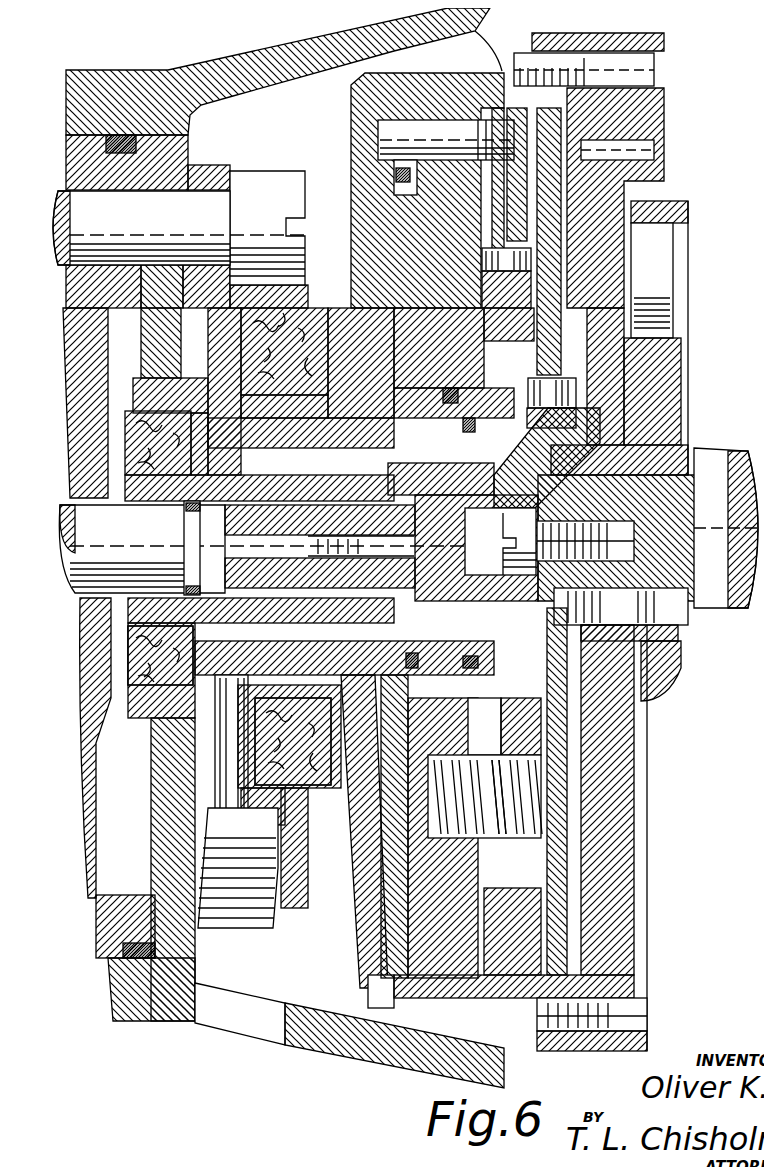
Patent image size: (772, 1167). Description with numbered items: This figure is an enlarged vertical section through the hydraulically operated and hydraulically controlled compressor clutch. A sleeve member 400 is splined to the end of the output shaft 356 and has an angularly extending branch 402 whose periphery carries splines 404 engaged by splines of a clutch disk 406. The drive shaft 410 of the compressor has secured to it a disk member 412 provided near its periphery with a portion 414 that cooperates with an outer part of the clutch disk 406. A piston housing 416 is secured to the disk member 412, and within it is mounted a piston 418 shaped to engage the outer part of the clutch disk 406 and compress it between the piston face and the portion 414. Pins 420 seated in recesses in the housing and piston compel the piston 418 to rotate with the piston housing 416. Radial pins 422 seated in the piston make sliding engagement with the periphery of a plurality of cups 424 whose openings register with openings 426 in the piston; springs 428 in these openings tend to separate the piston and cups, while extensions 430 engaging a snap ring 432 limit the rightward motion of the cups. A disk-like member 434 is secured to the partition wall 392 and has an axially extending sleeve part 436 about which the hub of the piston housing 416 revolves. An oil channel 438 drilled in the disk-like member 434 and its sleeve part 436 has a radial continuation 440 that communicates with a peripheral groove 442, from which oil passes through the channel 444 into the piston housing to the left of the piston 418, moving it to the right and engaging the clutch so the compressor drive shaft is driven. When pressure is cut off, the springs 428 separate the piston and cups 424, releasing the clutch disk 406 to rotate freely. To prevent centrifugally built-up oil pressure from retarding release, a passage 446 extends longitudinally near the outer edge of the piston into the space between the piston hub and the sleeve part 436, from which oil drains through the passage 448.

The output shaft 356 is at (66, 585).
The partition wall 392 is at (160, 162).
The sleeve member 400 is at (368, 495).
The angularly extending branch 402 is at (530, 385).
The splines 404 is at (565, 390).
The clutch disk 406 is at (545, 262).
The drive shaft 410 is at (688, 606).
The disk member 412 is at (616, 190).
The portion 414 is at (570, 95).
The piston housing 416 is at (348, 93).
The piston 418 is at (386, 185).
The pins 420 is at (415, 120).
The radial pins 422 is at (480, 180).
The cups 424 is at (480, 300).
The openings 426 is at (436, 830).
The springs 428 is at (492, 830).
The extensions 430 is at (465, 728).
The snap ring 432 is at (443, 838).
The disk-like member 434 is at (228, 163).
The sleeve part 436 is at (310, 410).
The oil channel 438 is at (185, 355).
The radial continuation 440 is at (494, 458).
The peripheral groove 442 is at (400, 650).
The channel 444 is at (400, 385).
The passage 446 is at (362, 968).
The passage 448 is at (200, 772).